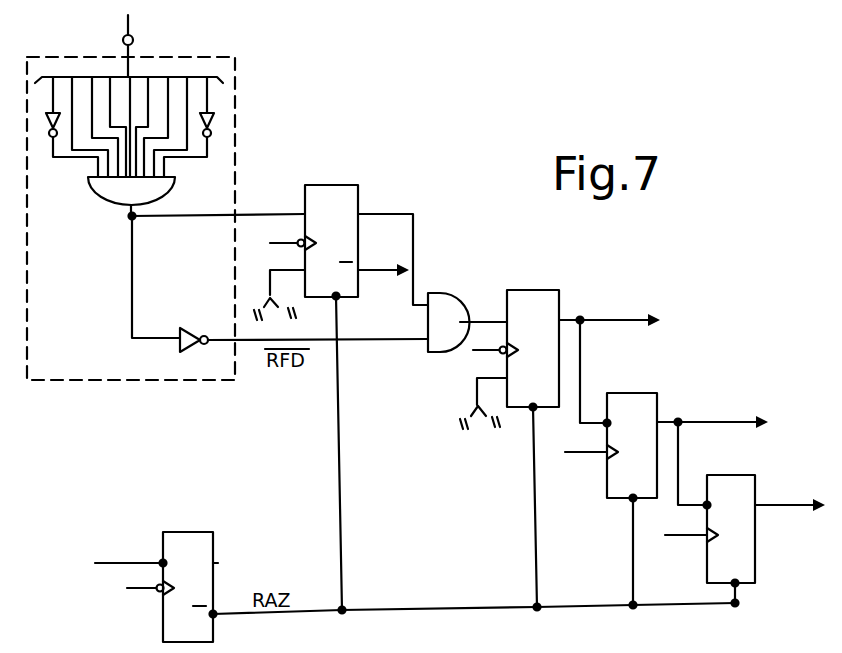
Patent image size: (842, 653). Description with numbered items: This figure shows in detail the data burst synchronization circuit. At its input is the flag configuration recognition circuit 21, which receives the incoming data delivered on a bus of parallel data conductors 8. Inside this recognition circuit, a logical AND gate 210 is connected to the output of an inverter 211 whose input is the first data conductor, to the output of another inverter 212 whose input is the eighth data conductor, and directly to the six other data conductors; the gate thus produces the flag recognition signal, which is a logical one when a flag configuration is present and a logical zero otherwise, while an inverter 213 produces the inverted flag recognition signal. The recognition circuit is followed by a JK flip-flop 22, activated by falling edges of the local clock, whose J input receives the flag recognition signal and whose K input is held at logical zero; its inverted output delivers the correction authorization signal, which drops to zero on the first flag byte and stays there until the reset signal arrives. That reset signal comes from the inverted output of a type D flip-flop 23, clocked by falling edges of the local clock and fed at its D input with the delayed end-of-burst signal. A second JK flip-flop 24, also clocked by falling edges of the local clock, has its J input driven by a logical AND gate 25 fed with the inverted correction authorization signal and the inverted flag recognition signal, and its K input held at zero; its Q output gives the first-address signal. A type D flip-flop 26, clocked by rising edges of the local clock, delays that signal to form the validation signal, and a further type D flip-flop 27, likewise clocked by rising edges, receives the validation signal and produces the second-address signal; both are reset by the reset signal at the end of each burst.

The input terminal 8 is at (129, 40).
The flag configuration recognition circuit 21 is at (237, 118).
The JK flip-flop 22 is at (331, 200).
The type D flip-flop 23 is at (192, 532).
The type JK flip-flop 24 is at (530, 297).
The logical AND gate 25 is at (441, 301).
The type D flip-flop 26 is at (637, 393).
The type D flip-flop 27 is at (723, 478).
The logical AND gate 210 is at (113, 203).
The inverter 211 is at (48, 130).
The inverter 212 is at (212, 130).
The inverter 213 is at (193, 318).